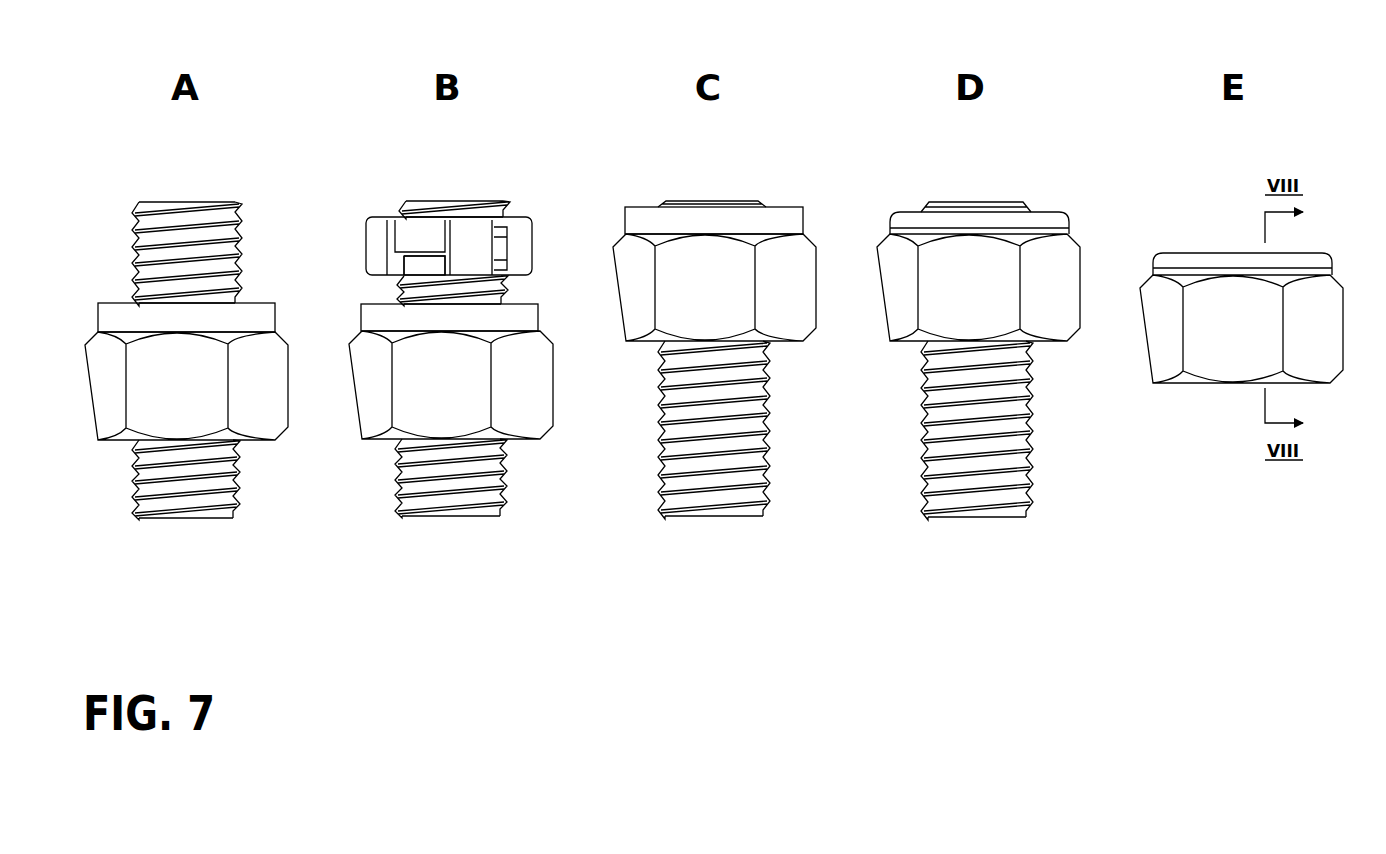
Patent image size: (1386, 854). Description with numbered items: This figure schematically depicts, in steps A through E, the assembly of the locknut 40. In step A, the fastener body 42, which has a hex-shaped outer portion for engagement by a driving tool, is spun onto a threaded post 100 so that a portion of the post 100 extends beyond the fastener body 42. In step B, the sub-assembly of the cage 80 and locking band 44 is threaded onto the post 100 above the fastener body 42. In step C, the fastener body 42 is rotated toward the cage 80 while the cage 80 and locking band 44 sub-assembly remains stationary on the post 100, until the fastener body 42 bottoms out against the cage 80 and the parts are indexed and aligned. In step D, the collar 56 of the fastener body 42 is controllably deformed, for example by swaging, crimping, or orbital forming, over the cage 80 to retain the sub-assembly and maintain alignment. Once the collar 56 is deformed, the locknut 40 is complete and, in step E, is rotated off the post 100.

The threaded post 100 is at (198, 212).
The collar 56 is at (98, 320).
The fastener body 42 is at (84, 411).
The cage 80 is at (539, 230).
The locking band 44 is at (397, 258).
The locknut 40 is at (901, 210).